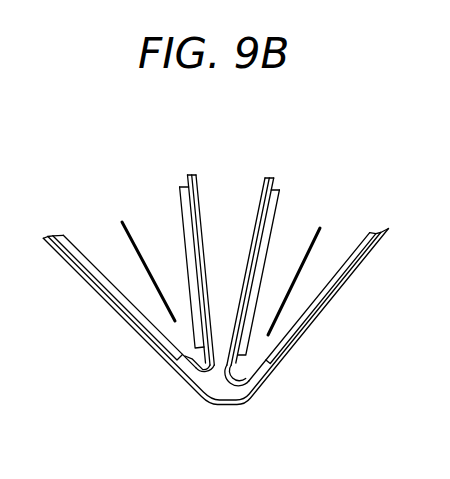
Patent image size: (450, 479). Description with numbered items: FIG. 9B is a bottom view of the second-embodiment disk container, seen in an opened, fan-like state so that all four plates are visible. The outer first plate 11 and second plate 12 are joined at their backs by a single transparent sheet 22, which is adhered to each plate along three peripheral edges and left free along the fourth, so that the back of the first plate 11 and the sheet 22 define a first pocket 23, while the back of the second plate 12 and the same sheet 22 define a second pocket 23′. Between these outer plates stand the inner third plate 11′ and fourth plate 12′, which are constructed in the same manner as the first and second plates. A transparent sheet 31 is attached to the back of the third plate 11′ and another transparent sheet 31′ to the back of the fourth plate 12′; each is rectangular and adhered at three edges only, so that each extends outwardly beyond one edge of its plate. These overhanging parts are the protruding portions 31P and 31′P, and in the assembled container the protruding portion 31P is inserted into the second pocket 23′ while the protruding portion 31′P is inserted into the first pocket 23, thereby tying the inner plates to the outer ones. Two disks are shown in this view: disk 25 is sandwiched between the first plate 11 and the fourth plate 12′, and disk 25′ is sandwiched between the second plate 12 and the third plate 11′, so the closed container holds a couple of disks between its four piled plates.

The first plate 11 is at (378, 231).
The second plate 12 is at (62, 234).
The third plate 11′ is at (180, 187).
The fourth plate 12′ is at (280, 190).
The transparent sheet 31 is at (195, 174).
The transparent sheet 31′ is at (266, 178).
The protruding portion 31P is at (211, 385).
The protruding portion 31′P is at (240, 388).
The transparent sheet 22 is at (258, 391).
The pocket 23 is at (328, 349).
The pocket 23′ is at (139, 361).
The disk 25 is at (316, 236).
The disk 25′ is at (130, 236).